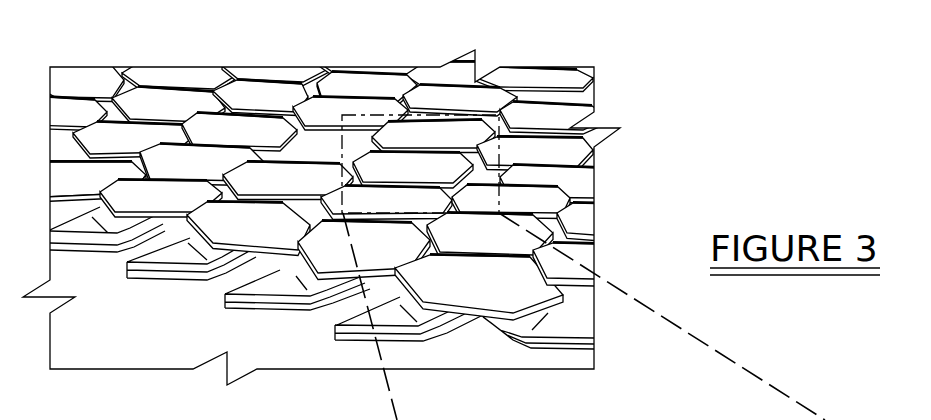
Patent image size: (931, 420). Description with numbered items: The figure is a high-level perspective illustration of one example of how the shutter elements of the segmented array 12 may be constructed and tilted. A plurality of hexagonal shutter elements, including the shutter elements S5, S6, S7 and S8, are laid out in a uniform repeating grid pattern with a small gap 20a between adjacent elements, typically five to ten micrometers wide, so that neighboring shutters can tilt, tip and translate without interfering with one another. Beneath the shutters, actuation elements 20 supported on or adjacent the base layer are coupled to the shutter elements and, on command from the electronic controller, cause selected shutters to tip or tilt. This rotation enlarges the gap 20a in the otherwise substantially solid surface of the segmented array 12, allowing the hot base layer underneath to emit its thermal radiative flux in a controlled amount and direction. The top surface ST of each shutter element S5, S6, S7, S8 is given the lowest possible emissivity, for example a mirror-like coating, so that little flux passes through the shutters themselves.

The segmented array 12 is at (534, 62).
The actuation elements 20 is at (185, 257).
The gap 20a is at (300, 87).
The shutter element S5 is at (73, 163).
The shutter element S6 is at (110, 135).
The shutter element S7 is at (178, 107).
The shutter element S8 is at (210, 78).
The top surface ST is at (80, 175).